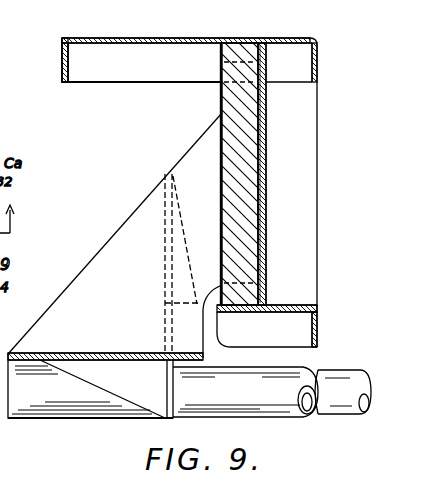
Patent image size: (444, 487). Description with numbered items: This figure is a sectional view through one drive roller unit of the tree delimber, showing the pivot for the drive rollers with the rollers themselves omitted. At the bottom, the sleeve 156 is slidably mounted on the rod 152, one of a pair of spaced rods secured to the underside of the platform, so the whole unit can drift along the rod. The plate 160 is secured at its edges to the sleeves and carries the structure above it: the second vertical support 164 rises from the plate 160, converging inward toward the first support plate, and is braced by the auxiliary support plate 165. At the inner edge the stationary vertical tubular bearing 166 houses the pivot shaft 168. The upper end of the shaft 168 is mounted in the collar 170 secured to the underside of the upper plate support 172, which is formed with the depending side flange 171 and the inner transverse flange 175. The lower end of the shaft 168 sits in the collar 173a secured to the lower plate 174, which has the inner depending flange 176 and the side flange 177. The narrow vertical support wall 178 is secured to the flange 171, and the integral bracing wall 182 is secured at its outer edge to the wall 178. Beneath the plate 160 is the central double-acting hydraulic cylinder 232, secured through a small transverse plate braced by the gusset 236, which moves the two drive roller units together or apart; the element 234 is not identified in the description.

The rod 152 is at (343, 380).
The sleeve 156 is at (40, 418).
The plate 160 is at (99, 352).
The second vertical support 164 is at (78, 276).
The auxiliary support plate 165 is at (165, 286).
The stationary vertical tubular bearing 166 is at (221, 97).
The pivot shaft 168 is at (238, 113).
The collar 170 is at (222, 53).
The depending side flange 171 is at (122, 70).
The upper plate support 172 is at (169, 38).
The collar 173a is at (218, 293).
The lower plate 174 is at (298, 307).
The inner transverse flange 175 is at (318, 43).
The inner depending flange 176 is at (318, 325).
The side flange 177 is at (265, 337).
The narrow vertical support wall 178 is at (298, 225).
The integral bracing wall 182 is at (265, 102).
The central double-acting hydraulic cylinder 232 is at (243, 418).
The tube 234 is at (172, 388).
The gusset 236 is at (150, 389).